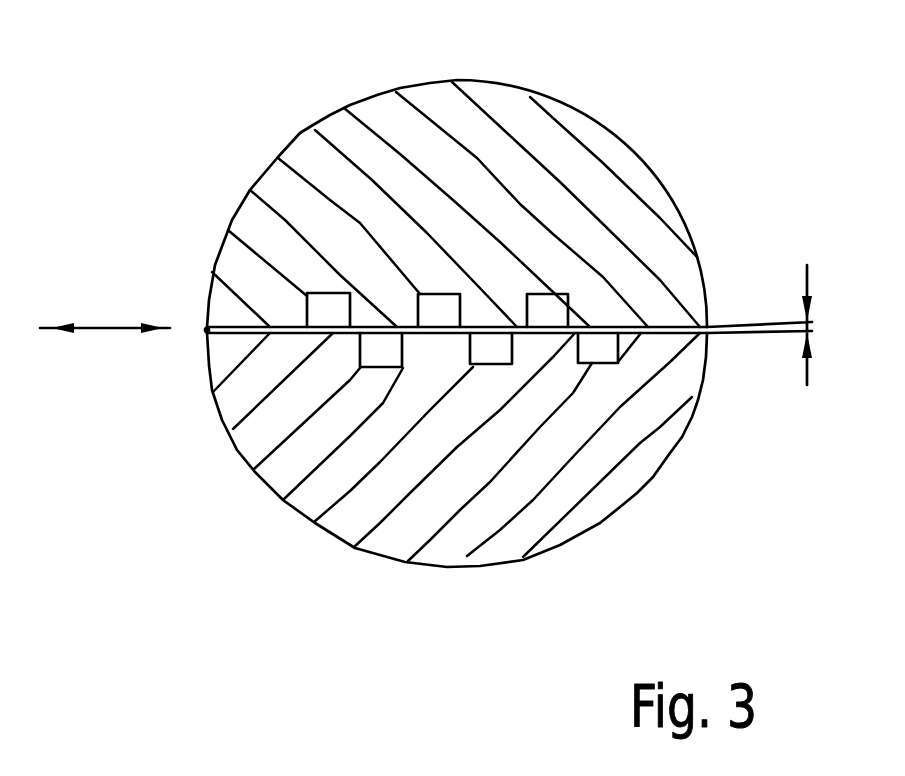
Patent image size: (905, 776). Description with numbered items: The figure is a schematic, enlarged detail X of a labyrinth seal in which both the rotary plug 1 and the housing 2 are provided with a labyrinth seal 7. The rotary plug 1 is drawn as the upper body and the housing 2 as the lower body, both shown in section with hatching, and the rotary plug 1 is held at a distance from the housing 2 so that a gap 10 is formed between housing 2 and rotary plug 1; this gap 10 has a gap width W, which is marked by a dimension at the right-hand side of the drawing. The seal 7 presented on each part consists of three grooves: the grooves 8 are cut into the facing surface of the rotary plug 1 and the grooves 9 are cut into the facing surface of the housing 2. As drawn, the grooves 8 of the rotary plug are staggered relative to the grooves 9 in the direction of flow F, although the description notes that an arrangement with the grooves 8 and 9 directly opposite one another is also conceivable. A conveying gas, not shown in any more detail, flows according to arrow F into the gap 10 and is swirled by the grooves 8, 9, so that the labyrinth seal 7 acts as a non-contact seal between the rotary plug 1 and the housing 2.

The rotary plug 1 is at (643, 160).
The housing 2 is at (680, 431).
The labyrinth seal 7 is at (285, 292).
The grooves of the rotary plug 8 is at (328, 293).
The grooves of the housing 9 is at (383, 367).
The gap 10 is at (192, 338).
The gap width W is at (780, 325).
The direction of flow F is at (121, 331).
The detail X is at (276, 90).